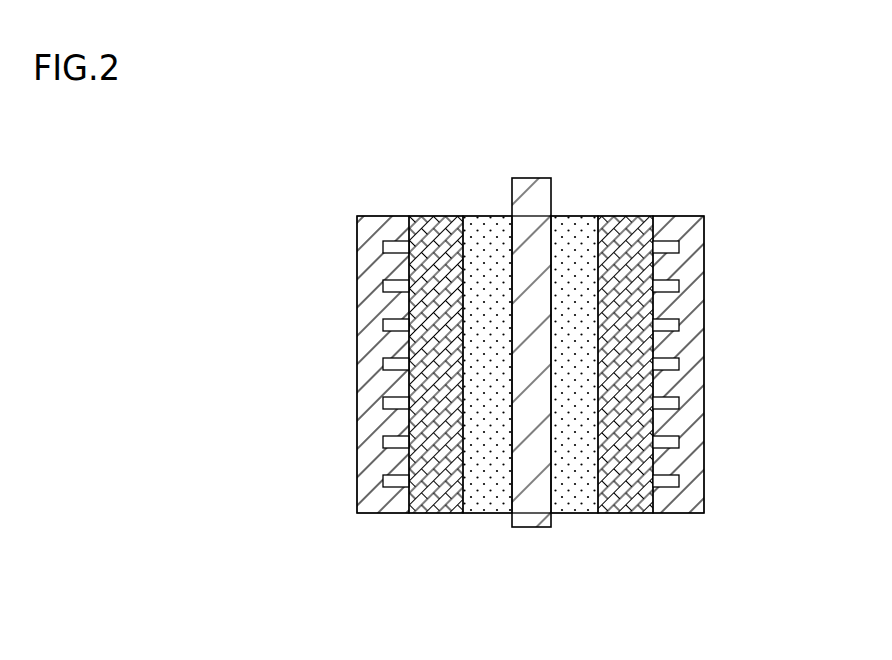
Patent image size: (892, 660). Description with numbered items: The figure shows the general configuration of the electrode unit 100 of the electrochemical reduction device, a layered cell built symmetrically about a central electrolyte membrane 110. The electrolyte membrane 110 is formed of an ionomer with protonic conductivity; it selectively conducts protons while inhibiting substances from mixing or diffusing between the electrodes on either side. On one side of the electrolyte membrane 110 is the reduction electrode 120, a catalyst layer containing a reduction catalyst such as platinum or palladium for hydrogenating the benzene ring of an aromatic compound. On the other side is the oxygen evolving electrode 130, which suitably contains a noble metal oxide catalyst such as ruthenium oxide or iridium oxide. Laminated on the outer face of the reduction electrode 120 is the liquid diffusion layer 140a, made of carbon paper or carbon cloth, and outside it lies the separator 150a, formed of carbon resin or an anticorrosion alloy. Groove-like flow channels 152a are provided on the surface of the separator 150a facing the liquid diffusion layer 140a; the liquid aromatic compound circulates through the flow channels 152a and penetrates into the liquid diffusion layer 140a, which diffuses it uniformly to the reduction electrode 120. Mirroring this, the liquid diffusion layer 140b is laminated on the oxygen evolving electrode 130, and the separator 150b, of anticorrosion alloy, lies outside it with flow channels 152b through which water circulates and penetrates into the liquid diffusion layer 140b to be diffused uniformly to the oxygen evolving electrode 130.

The electrode unit 100 is at (556, 621).
The electrolyte membrane 110 is at (532, 175).
The reduction electrode 120 is at (486, 216).
The oxygen evolving electrode 130 is at (577, 216).
The liquid diffusion layer 140a is at (432, 514).
The liquid diffusion layer 140b is at (620, 514).
The separator 150a is at (357, 463).
The separator 150b is at (705, 455).
The flow channel 152a is at (393, 325).
The flow channel 152b is at (667, 324).